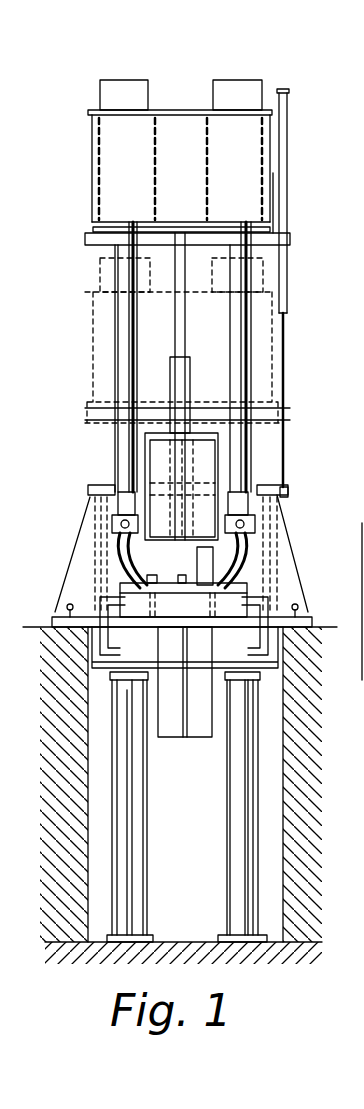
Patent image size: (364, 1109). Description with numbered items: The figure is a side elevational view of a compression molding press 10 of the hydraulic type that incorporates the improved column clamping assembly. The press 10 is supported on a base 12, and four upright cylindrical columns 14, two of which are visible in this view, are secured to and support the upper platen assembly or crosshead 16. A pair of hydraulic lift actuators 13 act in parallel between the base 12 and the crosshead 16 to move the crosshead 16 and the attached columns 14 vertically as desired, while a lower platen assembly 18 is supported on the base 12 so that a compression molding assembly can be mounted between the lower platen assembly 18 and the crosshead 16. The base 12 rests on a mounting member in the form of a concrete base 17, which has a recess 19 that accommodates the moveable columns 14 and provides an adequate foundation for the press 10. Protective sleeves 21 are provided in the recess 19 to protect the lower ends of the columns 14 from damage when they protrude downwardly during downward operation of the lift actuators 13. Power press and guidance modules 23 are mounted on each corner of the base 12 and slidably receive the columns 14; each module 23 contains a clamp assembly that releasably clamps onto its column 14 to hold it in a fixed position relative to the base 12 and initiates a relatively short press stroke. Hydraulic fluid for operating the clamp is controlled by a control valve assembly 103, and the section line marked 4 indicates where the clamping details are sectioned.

The compression molding press 10 is at (303, 230).
The base 12 is at (82, 512).
The hydraulic lift actuators 13 is at (178, 332).
The upright cylindrical columns 14 is at (115, 278).
The upper platen assembly or crosshead 16 is at (283, 72).
The concrete base 17 is at (310, 633).
The lower platen assembly 18 is at (291, 480).
The recess 19 is at (192, 861).
The protective sleeves 21 is at (240, 780).
The power press and guidance modules 23 is at (358, 506).
The control valve assembly 103 is at (358, 470).
The section line 4- 4 is at (363, 518).